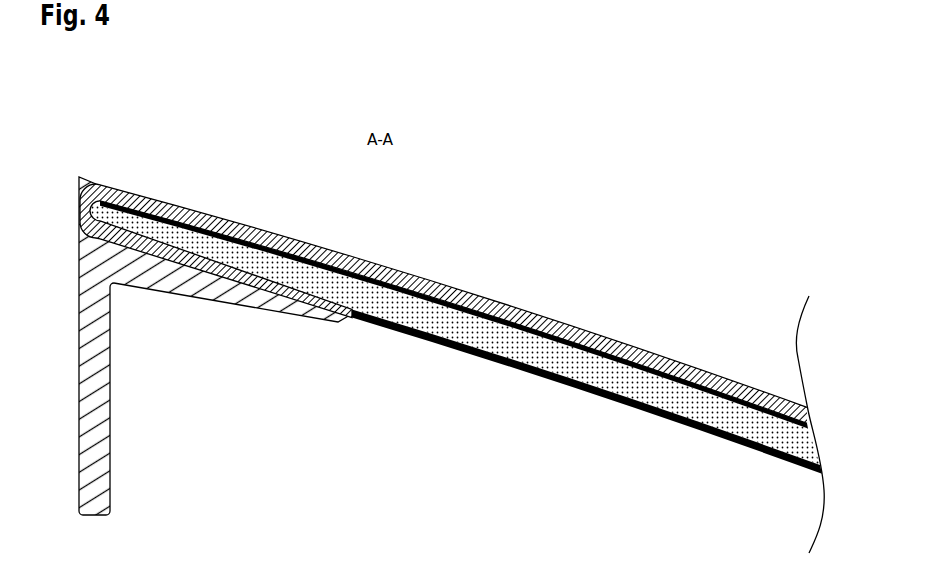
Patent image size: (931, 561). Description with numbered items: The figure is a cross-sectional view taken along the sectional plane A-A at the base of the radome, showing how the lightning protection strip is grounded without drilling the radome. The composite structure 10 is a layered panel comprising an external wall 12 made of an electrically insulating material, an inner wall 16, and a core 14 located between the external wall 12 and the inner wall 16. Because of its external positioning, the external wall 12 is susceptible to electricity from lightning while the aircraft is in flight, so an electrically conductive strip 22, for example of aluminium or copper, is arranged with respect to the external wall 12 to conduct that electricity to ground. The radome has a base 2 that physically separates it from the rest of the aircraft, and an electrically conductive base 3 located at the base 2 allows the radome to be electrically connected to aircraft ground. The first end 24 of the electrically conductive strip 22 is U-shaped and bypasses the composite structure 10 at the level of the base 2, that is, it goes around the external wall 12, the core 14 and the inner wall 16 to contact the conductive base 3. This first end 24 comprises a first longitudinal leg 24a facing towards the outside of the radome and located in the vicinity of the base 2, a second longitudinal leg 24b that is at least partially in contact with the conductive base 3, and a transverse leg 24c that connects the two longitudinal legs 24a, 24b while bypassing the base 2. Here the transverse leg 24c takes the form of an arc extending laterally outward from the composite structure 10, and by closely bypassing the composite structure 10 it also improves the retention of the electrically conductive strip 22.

The composite structure 10 is at (490, 377).
The external wall 12 is at (632, 372).
The core 14 is at (508, 344).
The inner wall 16 is at (789, 456).
The electrically conductive strip 22 is at (695, 375).
The first end of the electrically conductive strip 24 is at (176, 269).
The first longitudinal leg 24a is at (185, 206).
The second longitudinal leg 24b is at (311, 312).
The transverse leg 24c is at (80, 219).
The base 2 is at (78, 254).
The electrically conductive base 3 is at (88, 301).